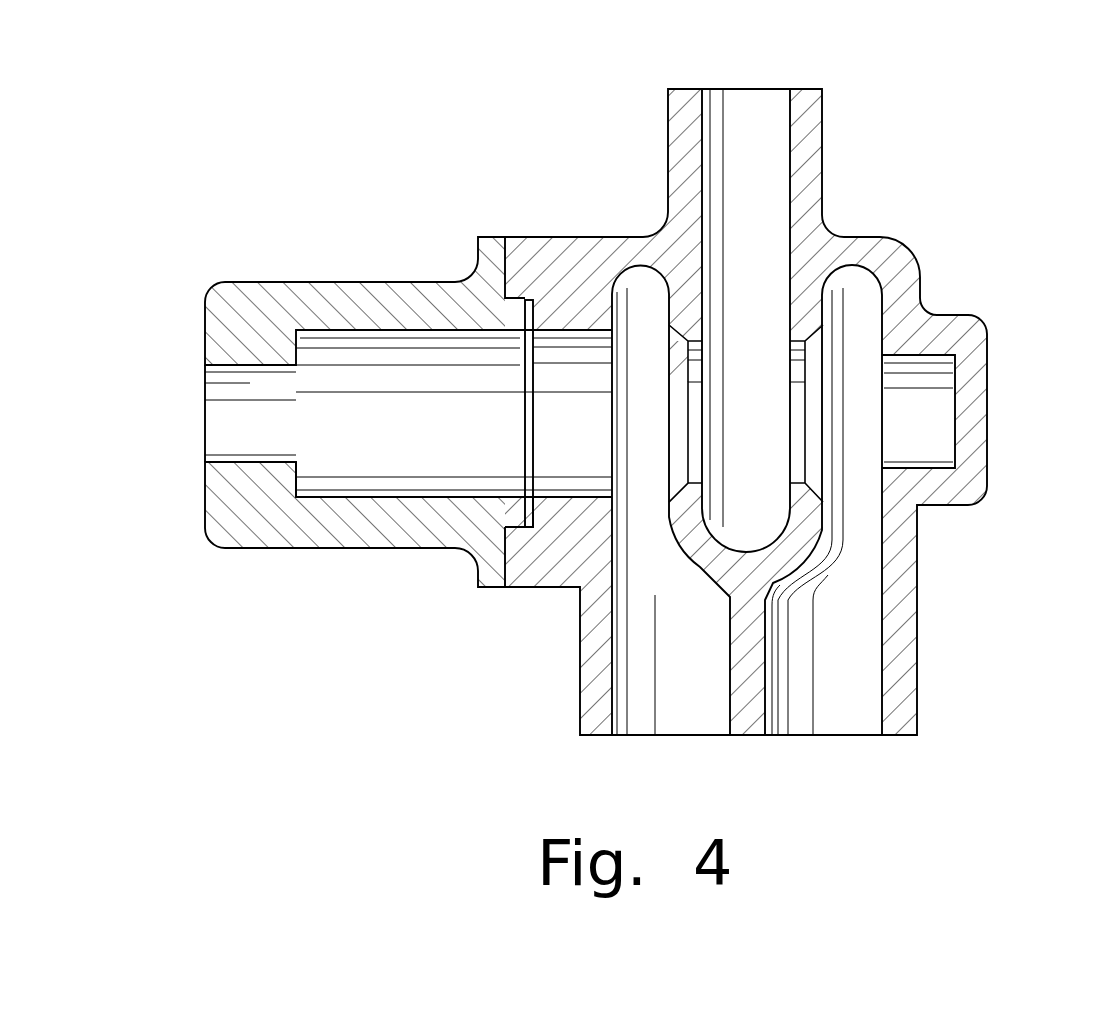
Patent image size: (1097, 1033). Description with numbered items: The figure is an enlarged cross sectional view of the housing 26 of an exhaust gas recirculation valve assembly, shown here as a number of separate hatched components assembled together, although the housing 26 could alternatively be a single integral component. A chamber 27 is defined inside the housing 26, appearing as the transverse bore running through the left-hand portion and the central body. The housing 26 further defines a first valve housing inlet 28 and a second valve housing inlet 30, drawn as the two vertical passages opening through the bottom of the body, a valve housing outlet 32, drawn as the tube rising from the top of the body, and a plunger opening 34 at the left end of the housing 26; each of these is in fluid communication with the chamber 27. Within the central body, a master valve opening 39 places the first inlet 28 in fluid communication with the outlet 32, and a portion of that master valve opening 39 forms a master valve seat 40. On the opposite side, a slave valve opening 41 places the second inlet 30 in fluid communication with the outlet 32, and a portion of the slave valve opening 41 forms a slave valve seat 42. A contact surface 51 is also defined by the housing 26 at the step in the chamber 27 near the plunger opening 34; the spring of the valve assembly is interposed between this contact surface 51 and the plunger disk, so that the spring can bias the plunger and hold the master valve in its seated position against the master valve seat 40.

The housing 26 is at (962, 216).
The chamber 27 is at (346, 330).
The first valve housing inlet 28 is at (882, 706).
The second valve housing inlet 30 is at (630, 708).
The valve housing outlet 32 is at (786, 106).
The plunger opening 34 is at (220, 460).
The master valve opening 39 is at (806, 482).
The master valve seat 40 is at (800, 485).
The slave valve opening 41 is at (688, 482).
The slave valve seat 42 is at (686, 483).
The contact surface 51 is at (300, 478).